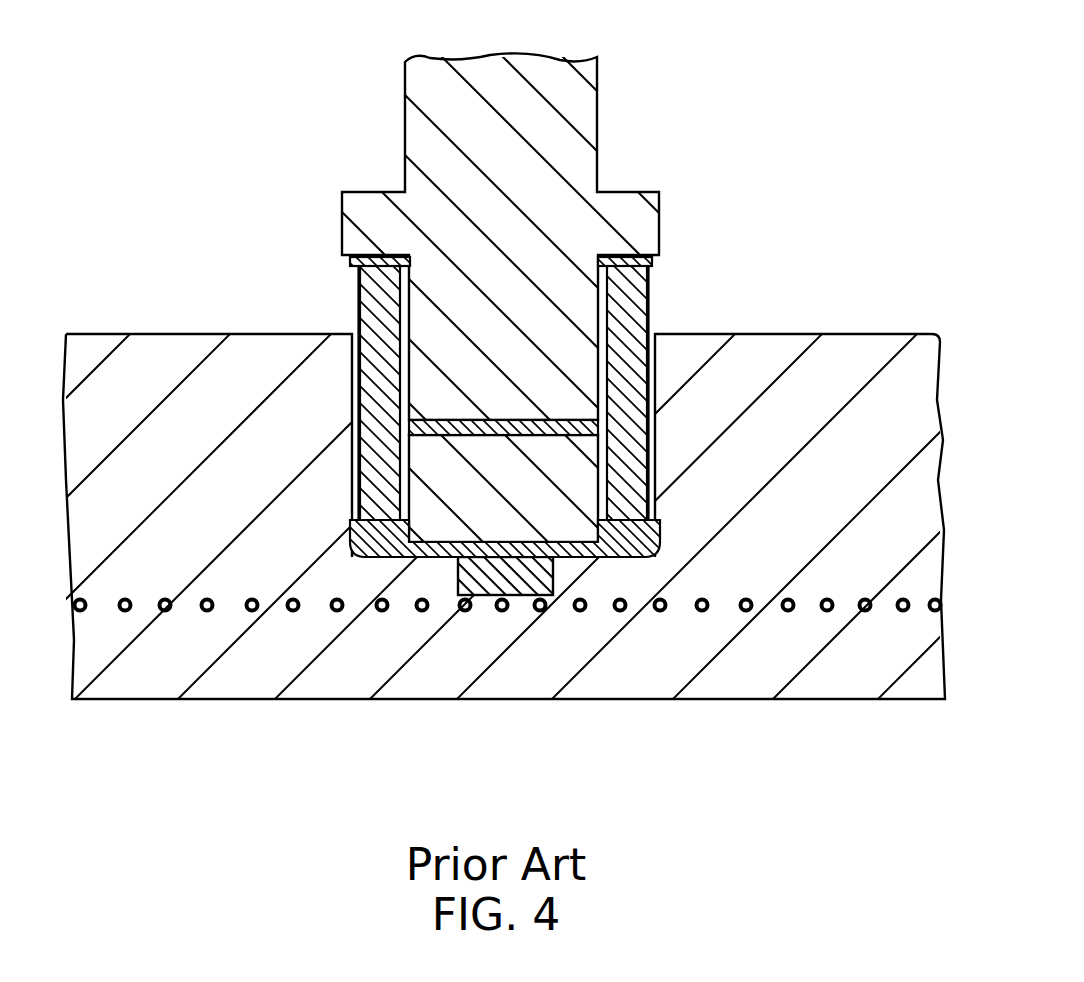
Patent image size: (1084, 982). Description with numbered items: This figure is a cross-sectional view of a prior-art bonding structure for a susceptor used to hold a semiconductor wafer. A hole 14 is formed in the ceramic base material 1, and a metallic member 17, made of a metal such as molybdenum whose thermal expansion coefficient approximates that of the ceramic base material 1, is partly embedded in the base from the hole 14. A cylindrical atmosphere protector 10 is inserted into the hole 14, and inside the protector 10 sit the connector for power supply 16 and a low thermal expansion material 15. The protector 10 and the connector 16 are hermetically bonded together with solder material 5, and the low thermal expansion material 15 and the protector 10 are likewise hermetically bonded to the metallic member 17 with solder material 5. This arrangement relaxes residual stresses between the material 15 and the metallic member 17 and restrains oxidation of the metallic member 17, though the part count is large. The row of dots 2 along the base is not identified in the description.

The ceramic base material 1 is at (853, 360).
The reinforcement layer (fiber row) 2 is at (747, 610).
The solder material 5 is at (352, 263).
The cylindrical atmosphere protector 10 is at (648, 292).
The hole 14 is at (657, 443).
The low thermal expansion material 15 is at (440, 481).
The connector for power supply 16 is at (548, 122).
The metallic member 17 is at (520, 598).